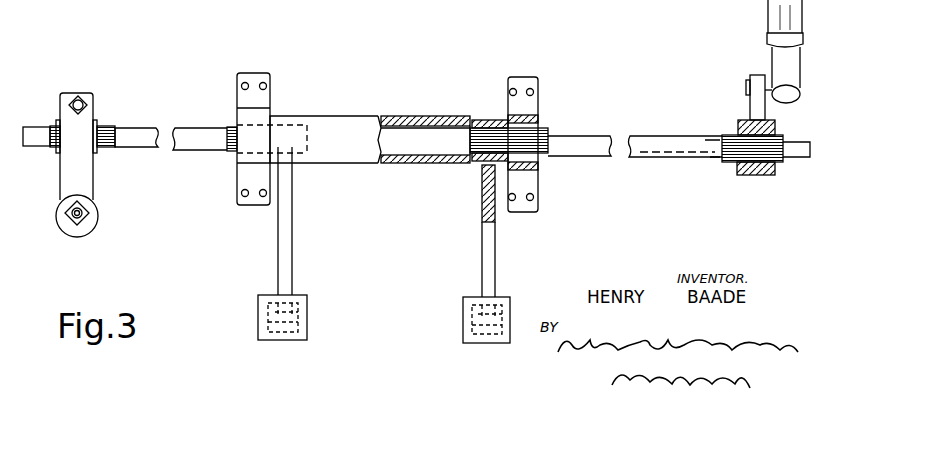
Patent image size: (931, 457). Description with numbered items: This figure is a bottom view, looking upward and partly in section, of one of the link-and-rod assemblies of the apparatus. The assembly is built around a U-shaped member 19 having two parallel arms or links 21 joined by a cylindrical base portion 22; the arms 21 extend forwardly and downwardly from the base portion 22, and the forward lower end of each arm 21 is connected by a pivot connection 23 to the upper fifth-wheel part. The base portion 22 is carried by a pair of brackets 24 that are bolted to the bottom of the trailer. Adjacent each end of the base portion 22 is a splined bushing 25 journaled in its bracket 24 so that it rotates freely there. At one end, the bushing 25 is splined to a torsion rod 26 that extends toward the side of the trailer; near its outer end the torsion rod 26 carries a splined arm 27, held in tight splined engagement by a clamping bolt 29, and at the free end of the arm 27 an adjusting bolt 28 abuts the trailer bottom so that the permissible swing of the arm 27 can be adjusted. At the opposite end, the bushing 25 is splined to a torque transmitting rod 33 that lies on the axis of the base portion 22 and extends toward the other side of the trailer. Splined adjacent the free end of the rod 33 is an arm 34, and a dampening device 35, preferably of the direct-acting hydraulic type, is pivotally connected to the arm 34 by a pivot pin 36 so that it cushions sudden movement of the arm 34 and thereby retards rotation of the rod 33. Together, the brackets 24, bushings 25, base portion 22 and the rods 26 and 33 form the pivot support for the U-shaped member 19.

The U-shaped member 19 is at (351, 108).
The arm 21 is at (292, 252).
The cylindrical base portion 22 is at (355, 167).
The pivot connection 23 is at (258, 320).
The bracket 24 is at (238, 93).
The splined bushing 25 is at (235, 122).
The torsion rod 26 is at (147, 150).
The arm 27 is at (87, 185).
The adjusting bolt 28 is at (70, 226).
The clamping bolt 29 is at (87, 100).
The torque transmitting rod 33 is at (603, 132).
The arm 34 is at (748, 103).
The dampening device 35 is at (770, 20).
The pivot pin 36 is at (748, 87).